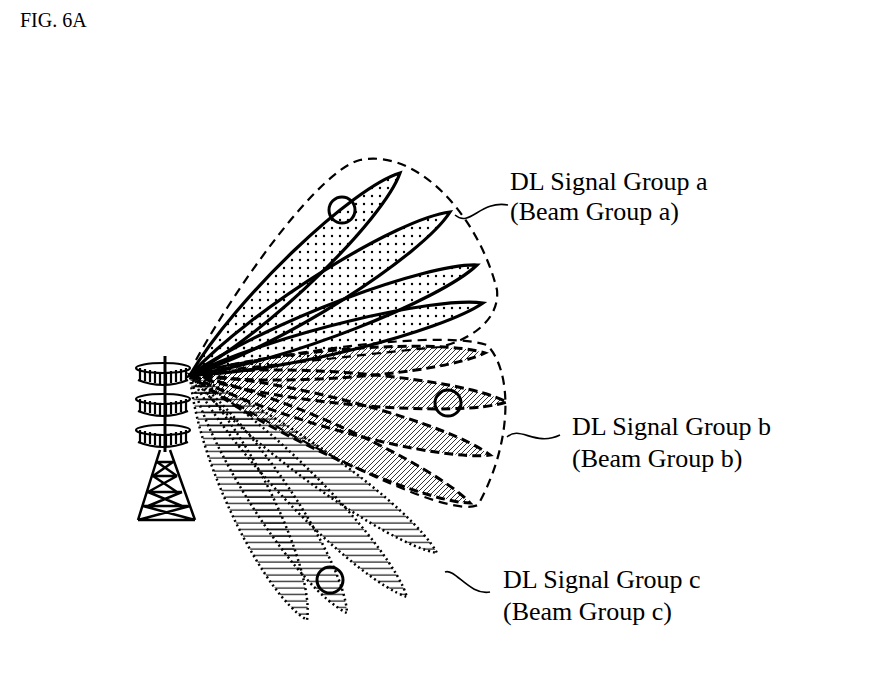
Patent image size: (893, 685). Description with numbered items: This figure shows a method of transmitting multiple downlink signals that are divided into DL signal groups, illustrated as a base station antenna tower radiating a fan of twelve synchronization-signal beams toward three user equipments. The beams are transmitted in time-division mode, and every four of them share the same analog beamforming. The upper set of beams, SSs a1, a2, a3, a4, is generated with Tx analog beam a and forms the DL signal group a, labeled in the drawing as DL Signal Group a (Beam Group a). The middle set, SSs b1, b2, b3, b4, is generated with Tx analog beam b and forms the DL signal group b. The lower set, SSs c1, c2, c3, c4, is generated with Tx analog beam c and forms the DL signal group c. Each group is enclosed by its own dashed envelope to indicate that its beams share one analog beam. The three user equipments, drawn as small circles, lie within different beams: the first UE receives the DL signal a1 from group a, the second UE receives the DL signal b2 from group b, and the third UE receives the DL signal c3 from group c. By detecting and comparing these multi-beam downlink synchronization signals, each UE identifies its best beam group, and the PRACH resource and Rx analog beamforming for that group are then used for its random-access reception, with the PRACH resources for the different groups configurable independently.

The SS a1 is at (301, 256).
The SS a2 is at (332, 280).
The SS a3 is at (353, 307).
The SS a4 is at (360, 333).
The SS b1 is at (355, 362).
The SS b2 is at (368, 393).
The SS b3 is at (358, 423).
The SS b4 is at (345, 447).
The SS c1 is at (333, 472).
The SS c2 is at (314, 495).
The SS c3 is at (287, 502).
The SS c4 is at (256, 511).